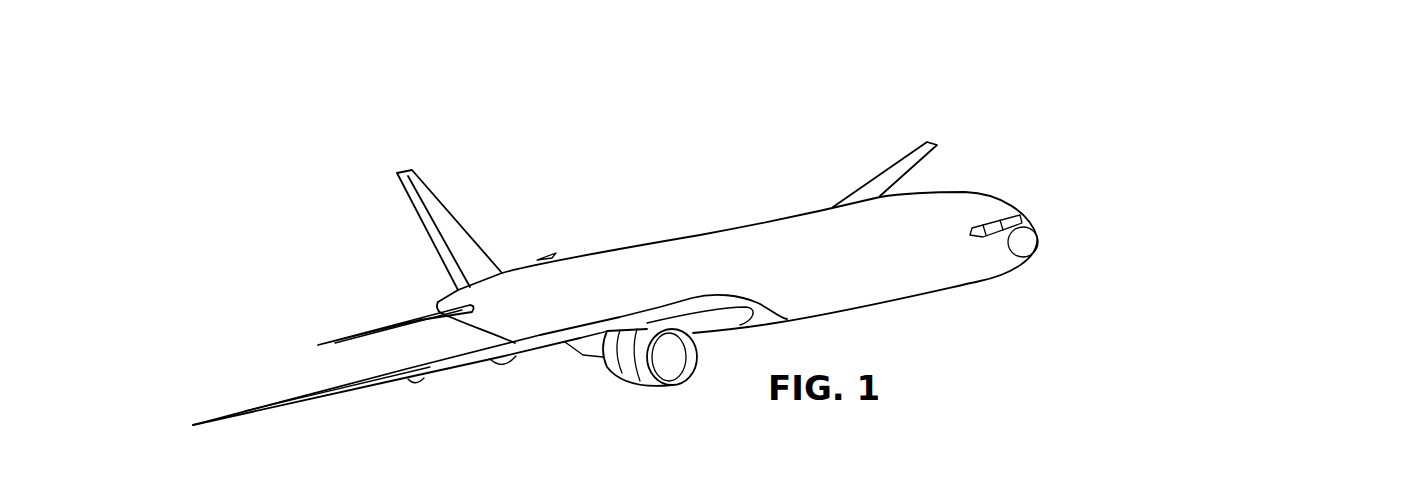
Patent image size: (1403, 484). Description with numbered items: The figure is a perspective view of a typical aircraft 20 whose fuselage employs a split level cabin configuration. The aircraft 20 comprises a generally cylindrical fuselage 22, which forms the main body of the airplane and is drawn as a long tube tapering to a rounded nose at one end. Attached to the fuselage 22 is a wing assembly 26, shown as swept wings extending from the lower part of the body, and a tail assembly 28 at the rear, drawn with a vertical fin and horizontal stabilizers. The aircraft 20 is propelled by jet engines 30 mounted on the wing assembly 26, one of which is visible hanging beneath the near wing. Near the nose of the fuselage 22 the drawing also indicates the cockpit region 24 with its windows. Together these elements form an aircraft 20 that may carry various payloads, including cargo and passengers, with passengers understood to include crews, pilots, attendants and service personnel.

The aircraft 20 is at (640, 251).
The fuselage 22 is at (695, 250).
The cockpit 24 is at (977, 210).
The wing assembly 26 is at (865, 150).
The tail assembly 28 is at (390, 257).
The jet engines 30 is at (632, 368).